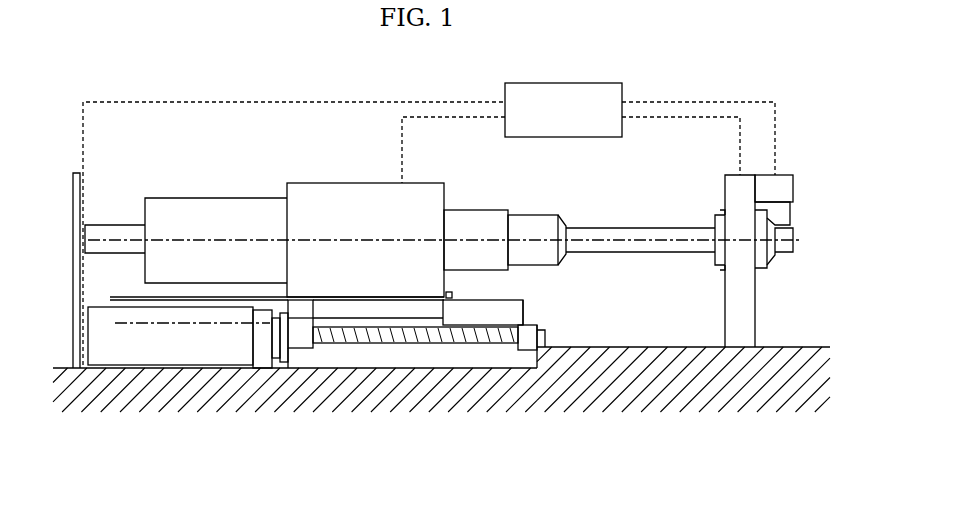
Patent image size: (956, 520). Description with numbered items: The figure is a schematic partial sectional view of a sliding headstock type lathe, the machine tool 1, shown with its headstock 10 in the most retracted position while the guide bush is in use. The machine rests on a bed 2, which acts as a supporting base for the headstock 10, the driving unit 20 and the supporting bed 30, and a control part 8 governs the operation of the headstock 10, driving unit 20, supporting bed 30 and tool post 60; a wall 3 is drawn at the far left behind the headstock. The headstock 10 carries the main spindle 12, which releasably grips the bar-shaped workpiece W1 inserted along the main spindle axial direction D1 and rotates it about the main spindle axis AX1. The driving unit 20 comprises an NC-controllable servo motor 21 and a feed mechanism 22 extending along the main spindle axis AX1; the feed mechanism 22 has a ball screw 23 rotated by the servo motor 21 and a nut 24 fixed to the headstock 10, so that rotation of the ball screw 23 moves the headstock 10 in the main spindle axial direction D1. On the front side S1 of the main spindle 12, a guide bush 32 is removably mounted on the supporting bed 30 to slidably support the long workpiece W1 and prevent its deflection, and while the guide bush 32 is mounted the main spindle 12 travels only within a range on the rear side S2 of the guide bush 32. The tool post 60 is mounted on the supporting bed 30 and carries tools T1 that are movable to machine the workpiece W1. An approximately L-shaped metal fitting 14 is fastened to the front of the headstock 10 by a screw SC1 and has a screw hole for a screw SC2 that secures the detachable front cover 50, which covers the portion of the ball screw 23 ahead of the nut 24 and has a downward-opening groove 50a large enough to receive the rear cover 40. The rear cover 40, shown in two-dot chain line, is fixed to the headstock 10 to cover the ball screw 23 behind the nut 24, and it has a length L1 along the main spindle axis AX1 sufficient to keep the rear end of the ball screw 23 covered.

The machine tool 1 is at (111, 82).
The bed 2 is at (670, 347).
The wall 3 is at (73, 183).
The control part 8 is at (563, 110).
The headstock 10 is at (309, 215).
The main spindle 12 is at (545, 215).
The metal fitting 14 is at (448, 292).
The driving unit 20 is at (316, 378).
The servo motor 21 is at (138, 353).
The feed mechanism 22 is at (351, 356).
The ball screw 23 is at (411, 343).
The nut 24 is at (305, 350).
The supporting bed 30 is at (756, 305).
The guide bush 32 is at (718, 212).
The first cover (rear cover) 40 is at (146, 297).
The second cover (front cover) 50 is at (515, 300).
The groove 50a is at (525, 308).
The tool post 60 is at (785, 175).
The main spindle axis AX1 is at (370, 238).
The screw SC1 is at (452, 292).
The screw SC2 is at (454, 298).
The workpiece W1 is at (676, 228).
The tool T1 is at (793, 222).
The length L1 is at (109, 297).
The front side S1 is at (485, 431).
The rear side S2 is at (485, 431).
The main spindle axial direction D1 is at (452, 447).